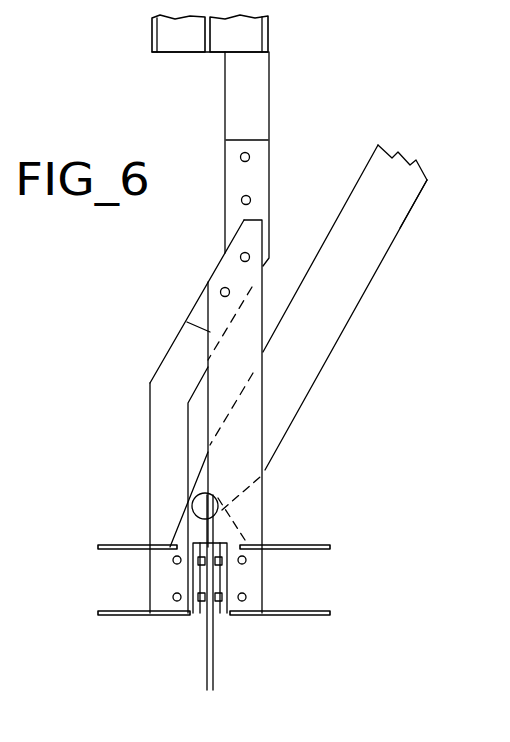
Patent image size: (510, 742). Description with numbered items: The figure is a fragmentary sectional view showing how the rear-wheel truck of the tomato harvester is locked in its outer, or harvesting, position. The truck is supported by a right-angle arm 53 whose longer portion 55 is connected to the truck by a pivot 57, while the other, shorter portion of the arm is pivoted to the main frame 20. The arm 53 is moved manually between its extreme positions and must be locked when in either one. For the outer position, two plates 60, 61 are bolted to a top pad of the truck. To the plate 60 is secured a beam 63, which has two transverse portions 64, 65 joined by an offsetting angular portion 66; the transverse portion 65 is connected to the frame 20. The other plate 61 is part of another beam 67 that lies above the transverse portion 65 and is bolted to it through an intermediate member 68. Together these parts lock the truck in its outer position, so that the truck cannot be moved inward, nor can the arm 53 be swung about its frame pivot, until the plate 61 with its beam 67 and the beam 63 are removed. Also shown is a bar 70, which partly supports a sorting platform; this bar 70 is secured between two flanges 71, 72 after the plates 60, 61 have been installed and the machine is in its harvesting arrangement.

The main frame 20 is at (175, 38).
The transverse portion 65 is at (262, 113).
The offsetting angular portion 66 is at (170, 357).
The intermediate member 68 is at (197, 312).
The beam 63 is at (148, 388).
The transverse portion 64 is at (162, 483).
The longer portion 55 is at (337, 318).
The right-angle arm 53 is at (403, 227).
The pivot 57 is at (200, 503).
The beam 67 is at (253, 507).
The plate 60 is at (160, 577).
The plate 61 is at (262, 578).
The flange 71 is at (198, 615).
The flange 72 is at (220, 615).
The bar 70 is at (213, 672).